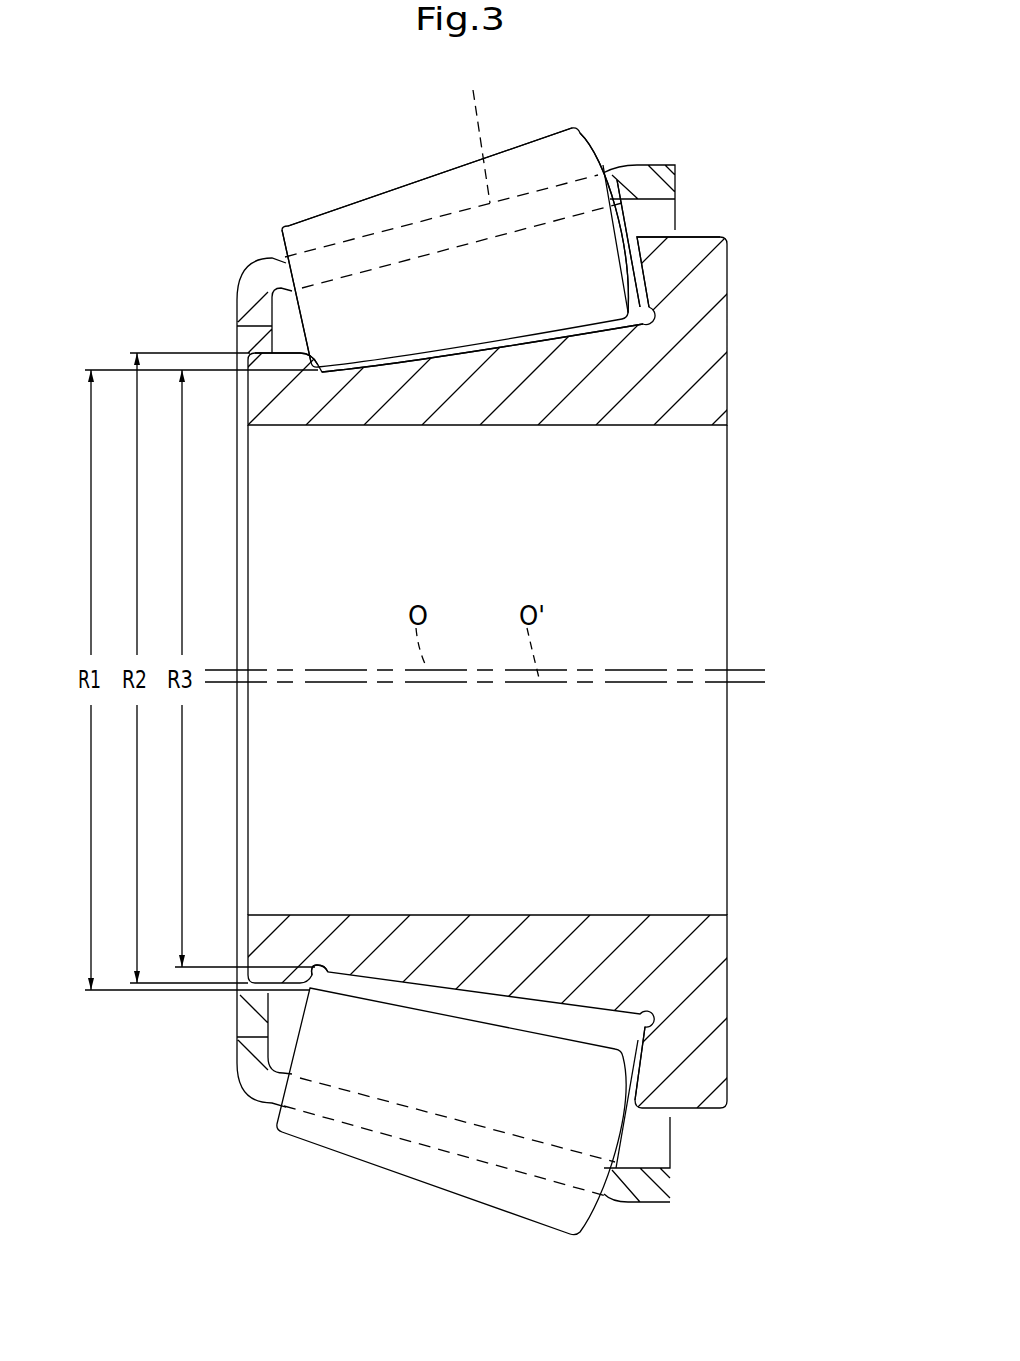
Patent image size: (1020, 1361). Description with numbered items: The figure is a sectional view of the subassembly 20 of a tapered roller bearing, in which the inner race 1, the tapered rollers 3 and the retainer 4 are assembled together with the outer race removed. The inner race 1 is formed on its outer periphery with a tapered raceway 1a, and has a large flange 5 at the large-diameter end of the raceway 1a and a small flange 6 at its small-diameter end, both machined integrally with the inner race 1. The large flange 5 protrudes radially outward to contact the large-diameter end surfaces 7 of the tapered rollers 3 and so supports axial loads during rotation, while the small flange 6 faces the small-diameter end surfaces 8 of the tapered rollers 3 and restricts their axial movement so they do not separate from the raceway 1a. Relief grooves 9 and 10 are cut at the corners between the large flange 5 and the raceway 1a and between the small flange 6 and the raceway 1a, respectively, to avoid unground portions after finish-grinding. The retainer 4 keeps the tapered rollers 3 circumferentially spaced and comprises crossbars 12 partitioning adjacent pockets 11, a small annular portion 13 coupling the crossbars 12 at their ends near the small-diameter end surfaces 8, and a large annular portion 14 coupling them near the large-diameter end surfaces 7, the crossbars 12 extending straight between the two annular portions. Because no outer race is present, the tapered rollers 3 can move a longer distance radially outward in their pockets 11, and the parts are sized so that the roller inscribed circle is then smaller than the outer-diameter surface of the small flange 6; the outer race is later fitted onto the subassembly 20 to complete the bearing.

The inner race 1 is at (727, 347).
The tapered raceway 1a is at (480, 342).
The tapered roller 3 is at (410, 187).
The retainer 4 is at (458, 637).
The large flange 5 is at (707, 259).
The small flange 6 is at (263, 356).
The large-diameter end surface 7 is at (626, 231).
The small-diameter end surface 8 is at (280, 243).
The relief groove 9 is at (640, 1017).
The relief groove 10 is at (340, 975).
The pocket 11 is at (562, 132).
The crossbar 12 is at (476, 133).
The small annular portion 13 is at (238, 297).
The large annular portion 14 is at (648, 167).
The subassembly 20 is at (328, 200).